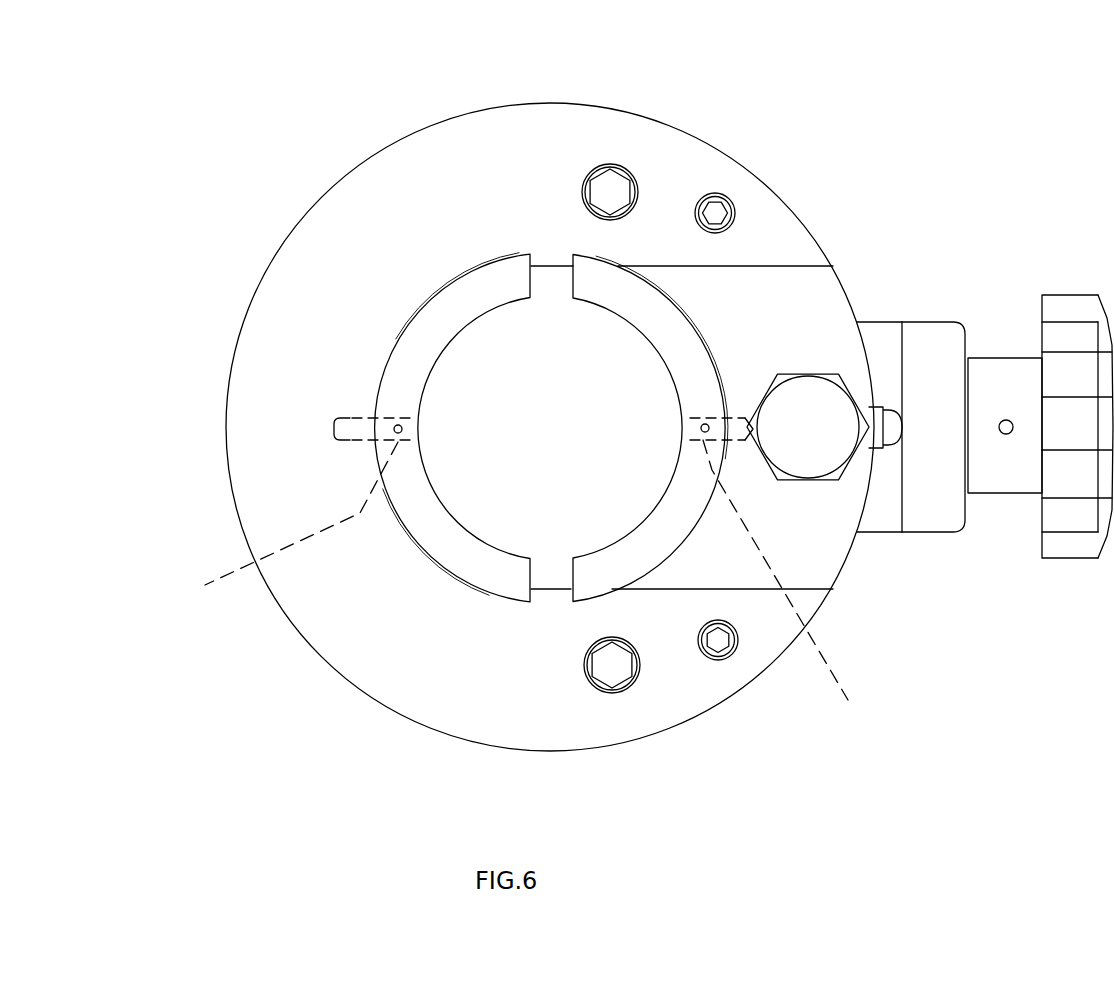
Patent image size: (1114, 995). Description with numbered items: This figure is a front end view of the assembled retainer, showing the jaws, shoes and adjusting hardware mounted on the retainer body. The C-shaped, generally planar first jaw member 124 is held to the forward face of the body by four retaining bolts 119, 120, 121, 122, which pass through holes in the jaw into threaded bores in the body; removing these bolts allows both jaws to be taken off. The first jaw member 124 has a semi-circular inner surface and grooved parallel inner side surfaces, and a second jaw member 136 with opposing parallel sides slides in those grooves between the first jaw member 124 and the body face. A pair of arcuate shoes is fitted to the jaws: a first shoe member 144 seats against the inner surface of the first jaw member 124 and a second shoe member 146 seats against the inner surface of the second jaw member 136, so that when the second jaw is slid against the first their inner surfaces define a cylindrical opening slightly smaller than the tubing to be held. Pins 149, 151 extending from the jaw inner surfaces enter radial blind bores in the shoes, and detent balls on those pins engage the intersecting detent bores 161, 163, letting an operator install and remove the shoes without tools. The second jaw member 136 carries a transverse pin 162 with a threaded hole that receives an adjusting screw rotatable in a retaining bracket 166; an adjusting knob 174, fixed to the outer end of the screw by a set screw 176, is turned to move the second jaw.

The retaining bolt 119 is at (621, 166).
The retaining bolt 120 is at (722, 202).
The retaining bolt 121 is at (628, 690).
The retaining bolt 122 is at (730, 658).
The first jaw member 124 is at (297, 625).
The second jaw member 136 is at (827, 590).
The first shoe member 144 is at (490, 293).
The second shoe member 146 is at (673, 347).
The pin 149 is at (278, 526).
The pin 151 is at (797, 587).
The intersecting detent bore 161 is at (395, 425).
The pin 162 is at (822, 480).
The intersecting detent bore 163 is at (708, 425).
The retaining bracket 166 is at (922, 322).
The adjusting knob 174 is at (1070, 295).
The set screw 176 is at (1005, 420).